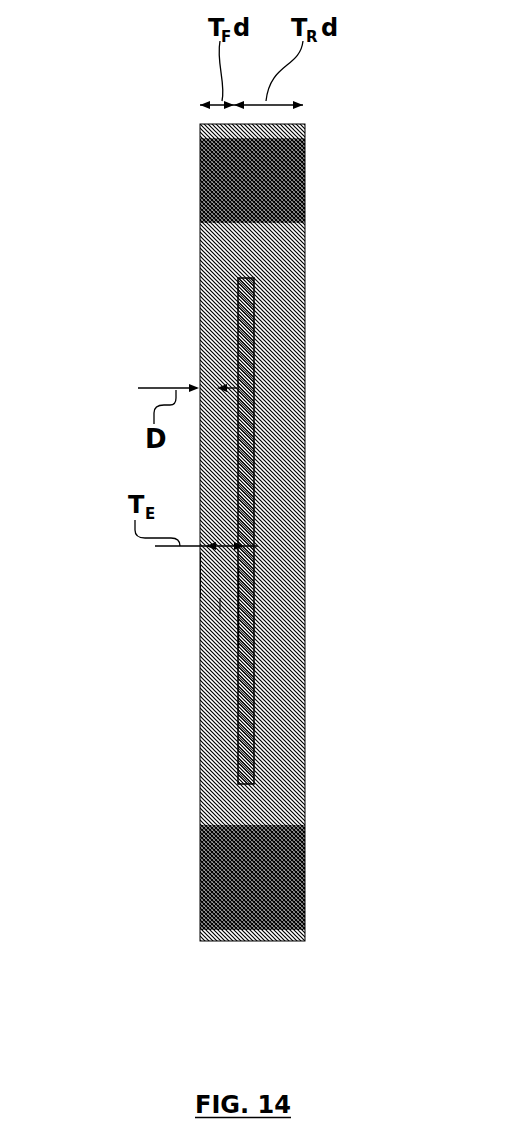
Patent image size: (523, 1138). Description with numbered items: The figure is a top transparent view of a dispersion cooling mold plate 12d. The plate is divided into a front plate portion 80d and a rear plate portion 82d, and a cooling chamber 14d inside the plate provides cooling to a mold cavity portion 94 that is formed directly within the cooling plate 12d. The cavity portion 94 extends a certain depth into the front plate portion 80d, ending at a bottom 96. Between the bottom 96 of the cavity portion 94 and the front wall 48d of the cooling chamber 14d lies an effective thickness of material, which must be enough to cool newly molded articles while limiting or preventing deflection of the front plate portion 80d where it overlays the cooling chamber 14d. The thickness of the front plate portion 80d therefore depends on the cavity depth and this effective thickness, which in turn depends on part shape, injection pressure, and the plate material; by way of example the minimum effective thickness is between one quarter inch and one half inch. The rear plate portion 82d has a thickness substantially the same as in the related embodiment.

The cooling plate 12d is at (160, 120).
The cooling chamber 14d is at (246, 444).
The front wall 48d is at (230, 598).
The front plate portion 80d is at (201, 926).
The rear plate portion 82d is at (268, 926).
The mold cavity portion 94 is at (202, 566).
The bottom 96 is at (212, 598).